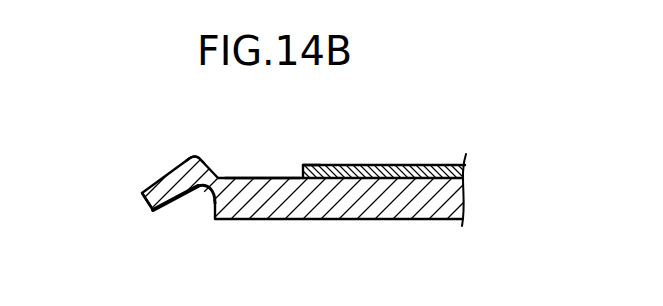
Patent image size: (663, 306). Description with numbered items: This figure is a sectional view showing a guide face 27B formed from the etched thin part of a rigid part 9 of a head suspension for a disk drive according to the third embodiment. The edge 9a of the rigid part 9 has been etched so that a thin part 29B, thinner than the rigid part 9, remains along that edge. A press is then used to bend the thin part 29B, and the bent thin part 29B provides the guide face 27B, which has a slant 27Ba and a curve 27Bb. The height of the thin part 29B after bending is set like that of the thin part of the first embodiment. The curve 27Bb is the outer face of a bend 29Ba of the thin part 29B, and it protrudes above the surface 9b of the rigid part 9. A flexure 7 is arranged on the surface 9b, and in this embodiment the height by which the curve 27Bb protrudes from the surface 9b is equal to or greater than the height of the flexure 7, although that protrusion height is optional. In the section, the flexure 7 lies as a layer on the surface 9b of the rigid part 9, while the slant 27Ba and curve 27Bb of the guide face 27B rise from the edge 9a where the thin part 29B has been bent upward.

The flexure 7 is at (380, 163).
The rigid part 9 is at (462, 189).
The edge 9a is at (213, 173).
The surface 9b is at (303, 165).
The guide face 27B is at (160, 174).
The slant 27Ba is at (142, 193).
The curve 27Bb is at (198, 156).
The thin part 29B is at (147, 204).
The bend 29Ba is at (199, 189).